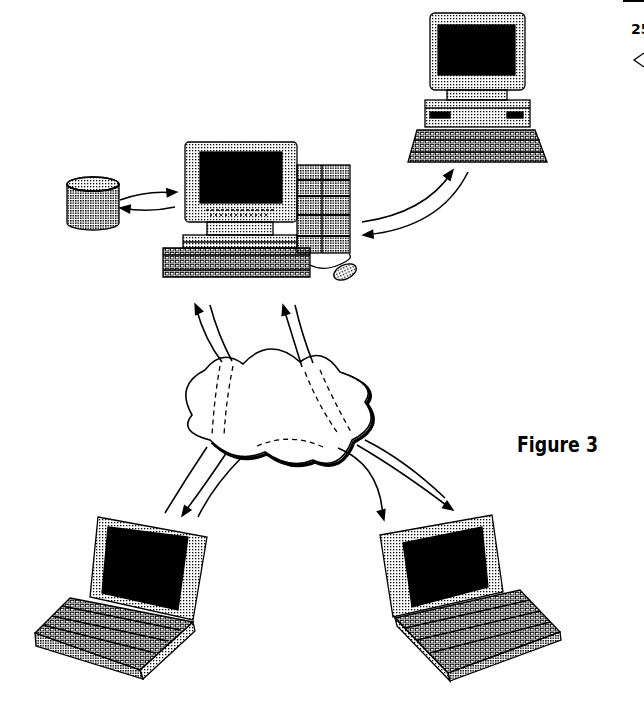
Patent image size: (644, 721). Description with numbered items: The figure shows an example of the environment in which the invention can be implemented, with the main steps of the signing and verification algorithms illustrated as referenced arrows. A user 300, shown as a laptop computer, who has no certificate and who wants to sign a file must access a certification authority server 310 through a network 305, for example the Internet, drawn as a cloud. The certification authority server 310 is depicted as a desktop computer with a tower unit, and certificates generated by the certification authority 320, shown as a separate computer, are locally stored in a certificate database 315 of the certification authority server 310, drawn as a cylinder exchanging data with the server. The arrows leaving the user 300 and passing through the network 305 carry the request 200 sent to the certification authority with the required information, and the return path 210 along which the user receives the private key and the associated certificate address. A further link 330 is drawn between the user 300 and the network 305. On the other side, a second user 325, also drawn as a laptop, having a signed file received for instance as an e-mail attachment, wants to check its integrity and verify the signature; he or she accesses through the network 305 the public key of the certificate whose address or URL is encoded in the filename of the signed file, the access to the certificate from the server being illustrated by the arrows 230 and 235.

The user 300 is at (188, 635).
The network 305 is at (188, 407).
The certification authority server 310 is at (213, 140).
The certificate database 315 is at (100, 177).
The certification authority 320 is at (430, 65).
The user 325 is at (408, 637).
The communication link 330 is at (215, 480).
The request to the certification authority 200 is at (187, 482).
The receiving the private key and certificate address 210 is at (253, 323).
The accessing the certificate 230 is at (293, 350).
The accessing the certificate 235 is at (410, 457).